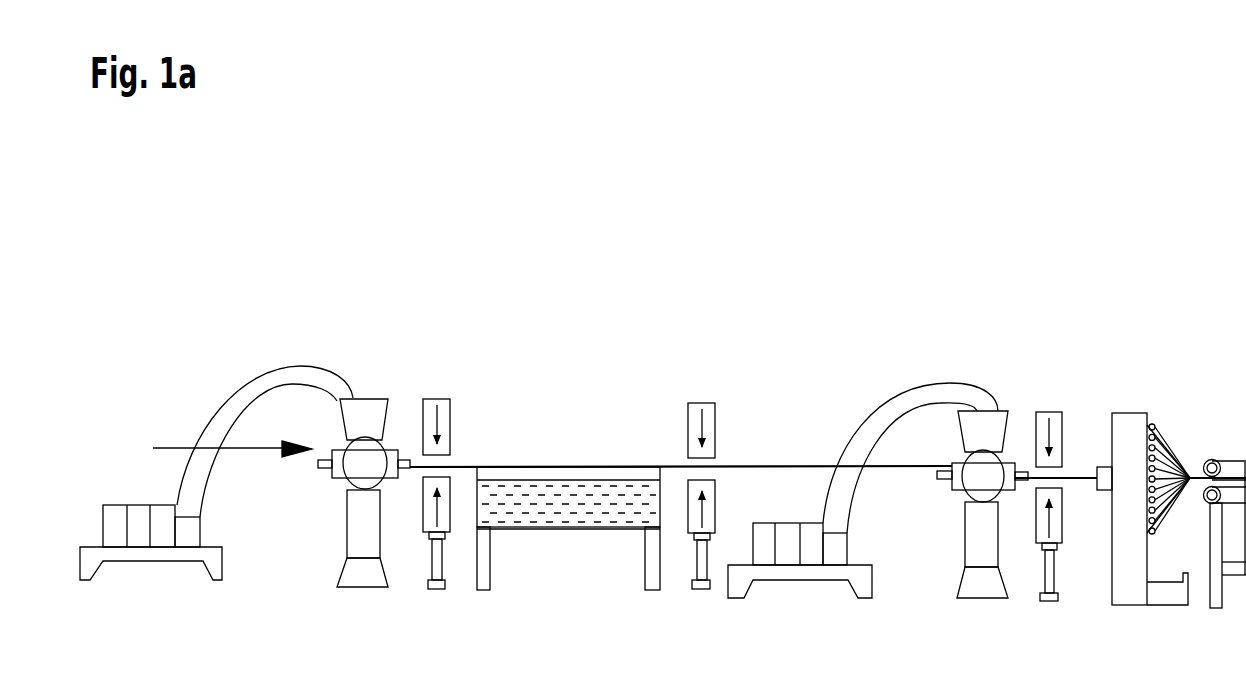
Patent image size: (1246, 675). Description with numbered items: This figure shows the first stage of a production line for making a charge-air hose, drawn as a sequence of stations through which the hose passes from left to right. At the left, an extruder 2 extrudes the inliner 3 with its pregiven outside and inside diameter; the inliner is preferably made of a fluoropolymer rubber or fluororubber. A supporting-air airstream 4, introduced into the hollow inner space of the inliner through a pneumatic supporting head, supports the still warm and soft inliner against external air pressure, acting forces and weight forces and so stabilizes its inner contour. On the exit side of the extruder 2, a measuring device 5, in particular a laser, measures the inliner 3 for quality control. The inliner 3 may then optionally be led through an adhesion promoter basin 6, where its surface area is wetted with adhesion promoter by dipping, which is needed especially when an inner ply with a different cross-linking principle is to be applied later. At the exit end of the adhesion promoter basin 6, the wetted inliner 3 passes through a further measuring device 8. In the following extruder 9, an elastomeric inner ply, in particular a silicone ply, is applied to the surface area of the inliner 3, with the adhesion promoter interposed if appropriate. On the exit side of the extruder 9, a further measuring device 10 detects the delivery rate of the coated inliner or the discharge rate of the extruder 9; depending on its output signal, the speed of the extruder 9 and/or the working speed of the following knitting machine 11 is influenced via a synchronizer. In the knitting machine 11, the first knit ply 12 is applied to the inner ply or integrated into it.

The extruder 2 is at (366, 382).
The inliner 3 is at (409, 461).
The supporting-air airstream 4 is at (258, 452).
The measuring device 5 is at (446, 382).
The adhesion promoter basin 6 is at (557, 533).
The further measuring device 8 is at (702, 386).
The extruder 9 is at (985, 380).
The further measuring device 10 is at (1050, 399).
The knitting machine 11 is at (1127, 399).
The first knit ply 12 is at (1182, 442).